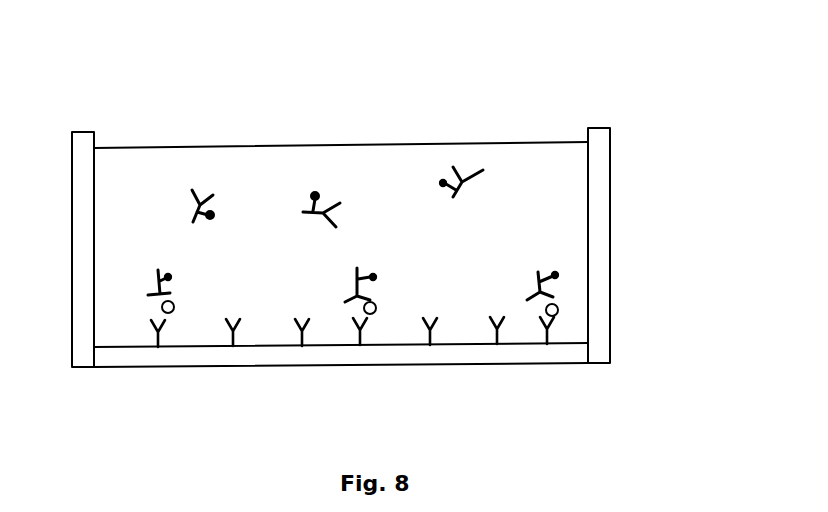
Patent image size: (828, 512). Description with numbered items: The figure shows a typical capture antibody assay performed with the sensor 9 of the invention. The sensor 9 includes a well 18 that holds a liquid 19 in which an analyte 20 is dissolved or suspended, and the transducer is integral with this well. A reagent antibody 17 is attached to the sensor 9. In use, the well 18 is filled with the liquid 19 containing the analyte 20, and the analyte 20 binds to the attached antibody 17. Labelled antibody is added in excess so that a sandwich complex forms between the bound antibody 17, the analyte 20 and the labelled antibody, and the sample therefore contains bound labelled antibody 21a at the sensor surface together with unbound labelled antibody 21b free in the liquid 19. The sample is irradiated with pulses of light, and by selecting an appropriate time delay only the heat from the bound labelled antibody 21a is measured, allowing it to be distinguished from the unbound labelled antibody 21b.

The sensor 9 is at (568, 352).
The antibody 17 is at (362, 335).
The well 18 is at (600, 158).
The liquid 19 is at (530, 170).
The analyte 20 is at (178, 307).
The bound labelled antibody 21a is at (527, 302).
The unbound labelled antibody 21b is at (467, 170).